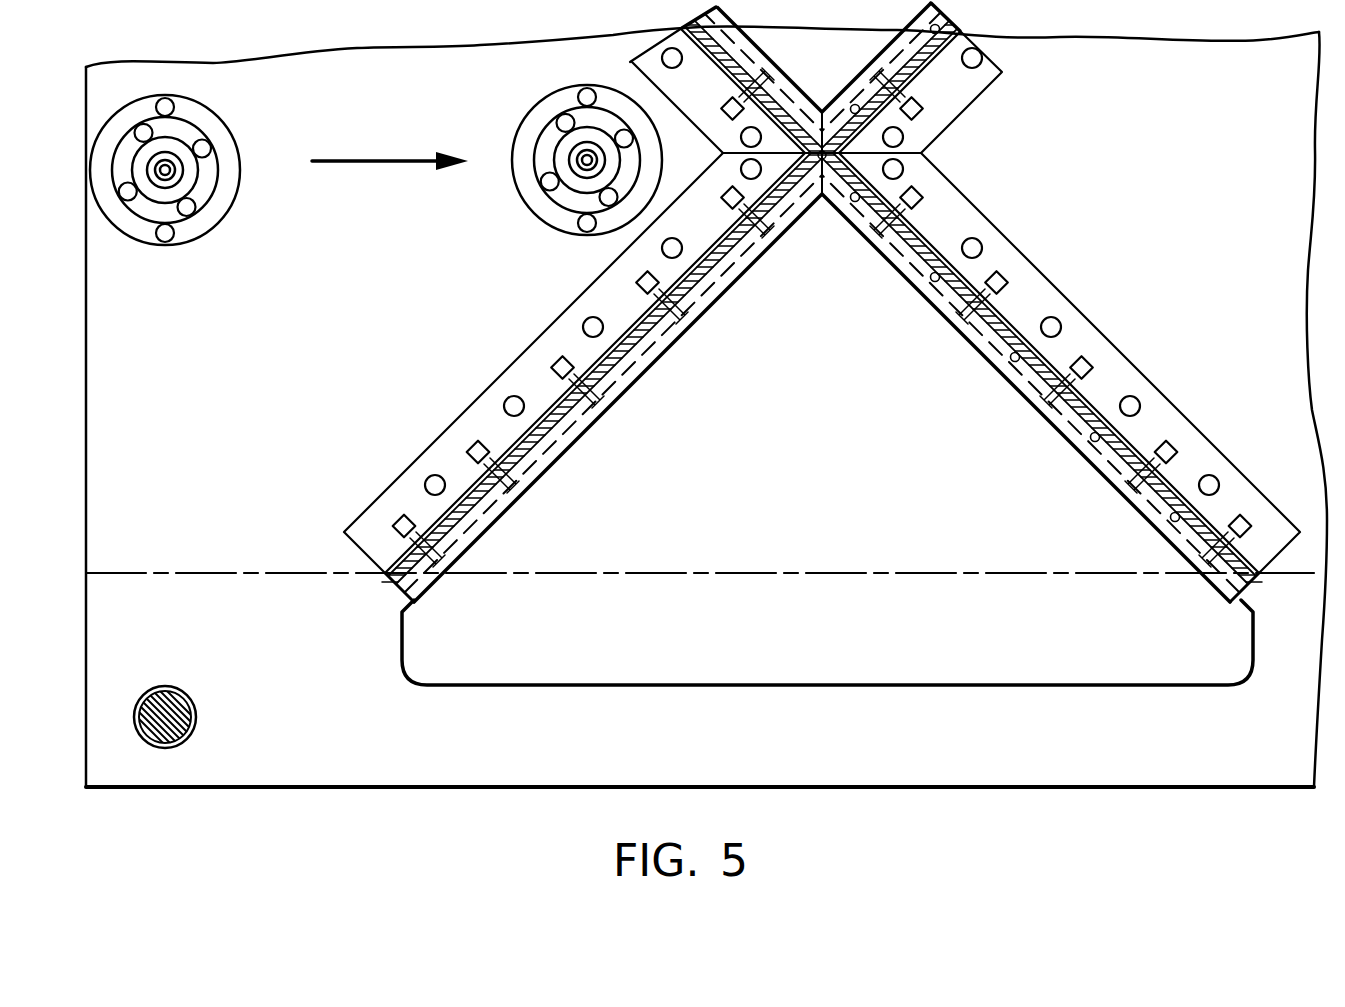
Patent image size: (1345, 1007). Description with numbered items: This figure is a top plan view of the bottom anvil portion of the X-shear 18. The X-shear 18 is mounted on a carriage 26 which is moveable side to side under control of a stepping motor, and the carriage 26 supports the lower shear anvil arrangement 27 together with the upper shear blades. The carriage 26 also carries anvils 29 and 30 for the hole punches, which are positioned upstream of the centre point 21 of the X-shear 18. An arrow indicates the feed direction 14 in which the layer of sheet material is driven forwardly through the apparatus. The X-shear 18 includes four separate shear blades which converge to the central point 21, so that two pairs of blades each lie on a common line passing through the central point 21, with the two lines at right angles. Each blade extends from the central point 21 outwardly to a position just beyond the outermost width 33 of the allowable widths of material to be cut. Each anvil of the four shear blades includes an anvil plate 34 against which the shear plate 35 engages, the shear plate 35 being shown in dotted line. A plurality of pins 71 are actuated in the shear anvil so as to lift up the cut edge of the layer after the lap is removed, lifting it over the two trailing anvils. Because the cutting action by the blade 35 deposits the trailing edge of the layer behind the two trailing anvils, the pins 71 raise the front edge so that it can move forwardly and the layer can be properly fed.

The feed direction 14 is at (372, 165).
The X-shear 18 is at (822, 301).
The centre point 21 is at (822, 192).
The carriage 26 is at (420, 790).
The lower shear anvil arrangement 27 is at (737, 290).
The anvil 29 is at (200, 131).
The anvil 30 is at (547, 124).
The outermost width 33 is at (678, 568).
The anvil plate 34 is at (540, 400).
The shear plate 35 is at (570, 424).
The pins 71 is at (1176, 520).